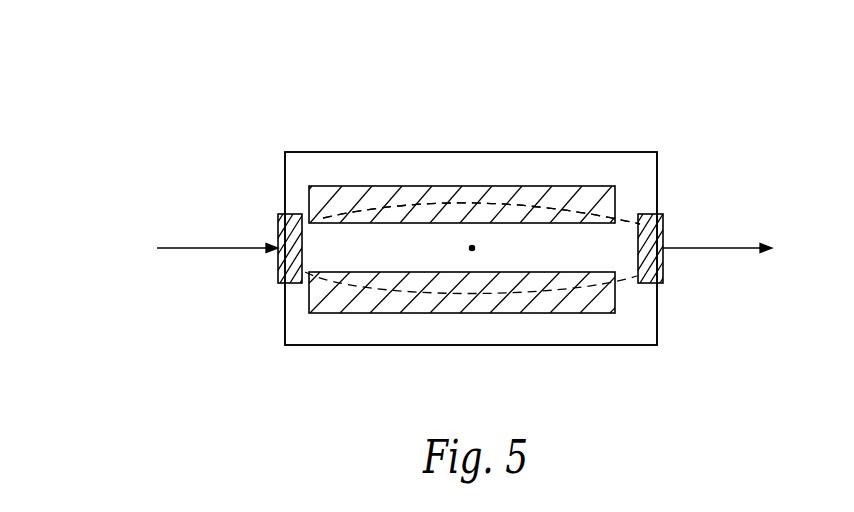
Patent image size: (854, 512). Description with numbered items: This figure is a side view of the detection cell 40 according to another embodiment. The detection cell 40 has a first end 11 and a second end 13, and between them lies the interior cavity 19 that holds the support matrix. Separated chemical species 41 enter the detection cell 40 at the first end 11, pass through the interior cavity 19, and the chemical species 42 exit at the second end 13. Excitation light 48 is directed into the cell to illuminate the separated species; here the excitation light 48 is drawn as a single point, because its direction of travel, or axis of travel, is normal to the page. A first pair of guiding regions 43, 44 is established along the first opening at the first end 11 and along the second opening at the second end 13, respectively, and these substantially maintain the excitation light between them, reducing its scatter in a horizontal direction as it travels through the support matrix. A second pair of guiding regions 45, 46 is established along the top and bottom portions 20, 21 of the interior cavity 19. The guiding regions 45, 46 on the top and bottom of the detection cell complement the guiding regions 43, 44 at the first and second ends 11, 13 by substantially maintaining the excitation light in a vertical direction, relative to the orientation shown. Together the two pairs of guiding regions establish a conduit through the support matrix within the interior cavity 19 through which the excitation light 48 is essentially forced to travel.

The detection cell 40 is at (716, 106).
The first end 11 is at (285, 320).
The second end 13 is at (657, 322).
The guiding region 45 is at (530, 196).
The guiding region 46 is at (594, 308).
The guiding region 43 is at (278, 271).
The guiding region 44 is at (665, 278).
The separated chemical species 41 is at (217, 233).
The chemical species 42 is at (717, 234).
The interior cavity 19 is at (362, 252).
The top portion 20 is at (398, 214).
The bottom portion 21 is at (366, 285).
The excitation light 48 is at (472, 250).